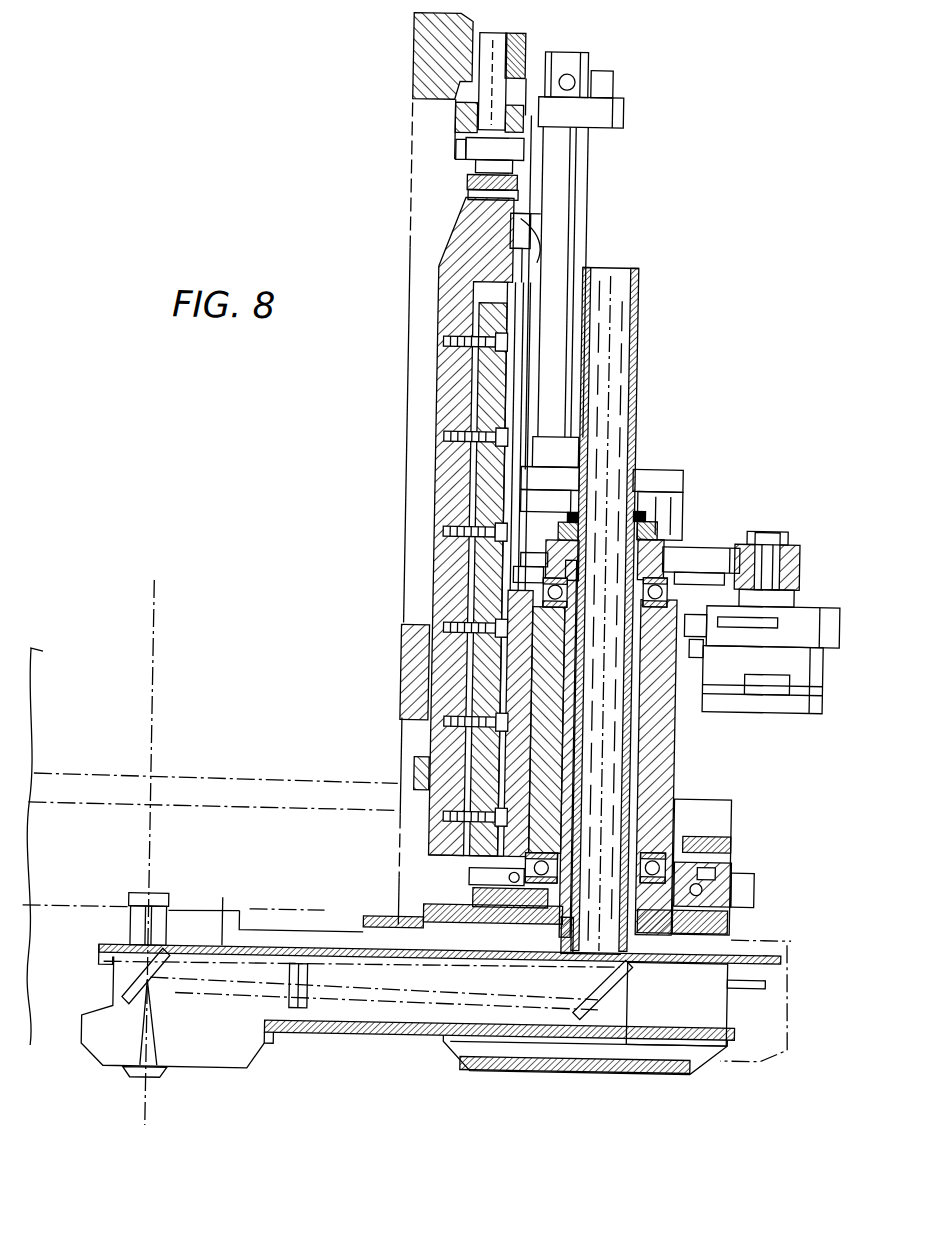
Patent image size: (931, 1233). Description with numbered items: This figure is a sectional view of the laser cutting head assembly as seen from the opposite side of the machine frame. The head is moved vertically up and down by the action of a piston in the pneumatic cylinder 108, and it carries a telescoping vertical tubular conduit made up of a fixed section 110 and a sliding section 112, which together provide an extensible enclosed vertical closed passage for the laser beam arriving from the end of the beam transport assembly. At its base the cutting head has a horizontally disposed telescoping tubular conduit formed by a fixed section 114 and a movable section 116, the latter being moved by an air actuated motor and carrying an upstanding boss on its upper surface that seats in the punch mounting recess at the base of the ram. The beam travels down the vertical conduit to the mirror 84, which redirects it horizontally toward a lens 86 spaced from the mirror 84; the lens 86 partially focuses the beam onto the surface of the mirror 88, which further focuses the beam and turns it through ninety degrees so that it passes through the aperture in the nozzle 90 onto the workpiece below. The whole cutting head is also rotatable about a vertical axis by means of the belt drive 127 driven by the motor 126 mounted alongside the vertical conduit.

The mirror 84 is at (627, 1010).
The lens 86 is at (305, 1014).
The mirror 88 is at (156, 984).
The nozzle 90 is at (108, 1052).
The pneumatic cylinder 108 is at (583, 204).
The fixed section 110 is at (634, 371).
The sliding section 112 is at (644, 786).
The fixed section 114 is at (688, 1065).
The movable section 116 is at (371, 1040).
The motor 126 is at (815, 601).
The belt drive 127 is at (704, 545).